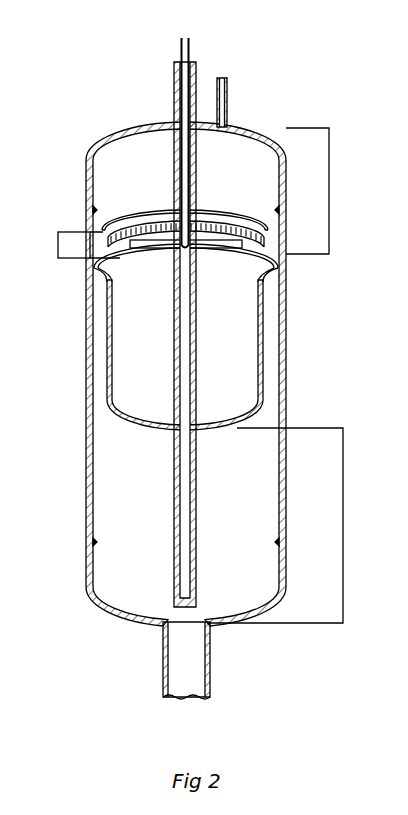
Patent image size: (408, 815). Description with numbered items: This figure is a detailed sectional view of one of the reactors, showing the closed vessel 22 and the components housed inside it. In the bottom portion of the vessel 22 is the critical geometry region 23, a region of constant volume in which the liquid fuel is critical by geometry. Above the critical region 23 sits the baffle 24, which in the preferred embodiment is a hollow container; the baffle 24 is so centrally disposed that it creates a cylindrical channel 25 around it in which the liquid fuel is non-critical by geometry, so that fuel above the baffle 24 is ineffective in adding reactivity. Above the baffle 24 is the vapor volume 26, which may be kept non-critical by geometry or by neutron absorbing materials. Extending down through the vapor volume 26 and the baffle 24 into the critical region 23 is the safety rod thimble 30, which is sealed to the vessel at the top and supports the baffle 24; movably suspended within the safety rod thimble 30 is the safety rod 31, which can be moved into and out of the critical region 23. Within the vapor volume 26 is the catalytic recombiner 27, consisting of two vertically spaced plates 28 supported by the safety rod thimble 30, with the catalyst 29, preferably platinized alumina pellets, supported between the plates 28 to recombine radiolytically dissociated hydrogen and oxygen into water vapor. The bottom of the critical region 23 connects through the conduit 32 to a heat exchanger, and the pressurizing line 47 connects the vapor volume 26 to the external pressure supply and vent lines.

The closed vessel 22 is at (284, 298).
The critical geometry region 23 is at (343, 530).
The baffle 24 is at (263, 327).
The cylindrical channel 25 is at (268, 392).
The vapor volume 26 is at (329, 180).
The catalytic recombiner 27 is at (58, 245).
The plates 28 is at (201, 212).
The catalyst 29 is at (213, 224).
The safety rod thimble 30 is at (197, 70).
The safety rod 31 is at (190, 44).
The conduit 32 is at (210, 665).
The pressurizing line 47 is at (228, 104).